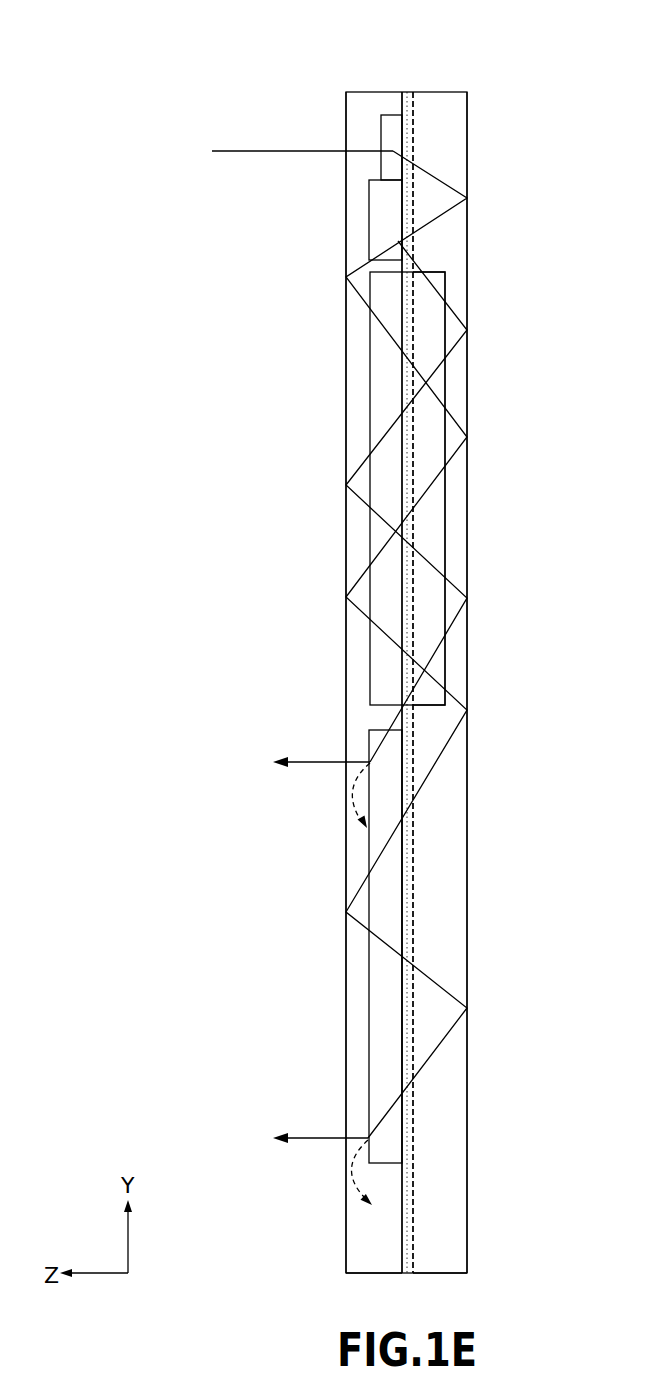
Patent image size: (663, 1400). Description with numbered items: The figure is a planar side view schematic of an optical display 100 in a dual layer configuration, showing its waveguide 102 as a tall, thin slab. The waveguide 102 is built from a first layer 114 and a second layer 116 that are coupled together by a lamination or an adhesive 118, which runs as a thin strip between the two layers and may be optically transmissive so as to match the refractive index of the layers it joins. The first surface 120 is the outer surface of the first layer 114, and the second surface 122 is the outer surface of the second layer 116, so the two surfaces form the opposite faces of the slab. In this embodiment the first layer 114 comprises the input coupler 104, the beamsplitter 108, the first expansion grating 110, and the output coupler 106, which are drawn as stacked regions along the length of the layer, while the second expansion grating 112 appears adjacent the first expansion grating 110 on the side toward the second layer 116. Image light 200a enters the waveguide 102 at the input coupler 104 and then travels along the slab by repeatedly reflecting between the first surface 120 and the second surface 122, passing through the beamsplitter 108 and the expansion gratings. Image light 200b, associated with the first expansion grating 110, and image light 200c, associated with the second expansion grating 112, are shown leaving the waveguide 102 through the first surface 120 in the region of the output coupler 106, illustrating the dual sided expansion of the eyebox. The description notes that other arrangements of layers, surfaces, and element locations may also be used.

The optical display 100 is at (226, 30).
The waveguide 102 is at (258, 96).
The input coupler 104 is at (393, 113).
The output coupler 106 is at (377, 956).
The beamsplitter 108 is at (377, 220).
The first expansion grating 110 is at (377, 580).
The second expansion grating 112 is at (437, 663).
The first layer 114 is at (365, 1230).
The second layer 116 is at (450, 1230).
The adhesive 118 is at (414, 117).
The first surface 120 is at (347, 1184).
The second surface 122 is at (467, 1184).
The image light 200a is at (247, 151).
The image light 200b is at (313, 762).
The image light 200c is at (317, 1135).